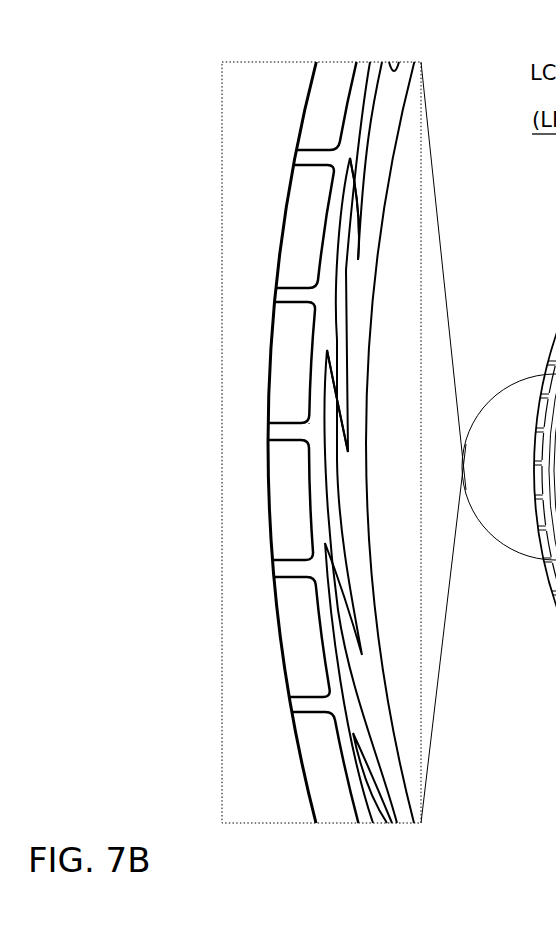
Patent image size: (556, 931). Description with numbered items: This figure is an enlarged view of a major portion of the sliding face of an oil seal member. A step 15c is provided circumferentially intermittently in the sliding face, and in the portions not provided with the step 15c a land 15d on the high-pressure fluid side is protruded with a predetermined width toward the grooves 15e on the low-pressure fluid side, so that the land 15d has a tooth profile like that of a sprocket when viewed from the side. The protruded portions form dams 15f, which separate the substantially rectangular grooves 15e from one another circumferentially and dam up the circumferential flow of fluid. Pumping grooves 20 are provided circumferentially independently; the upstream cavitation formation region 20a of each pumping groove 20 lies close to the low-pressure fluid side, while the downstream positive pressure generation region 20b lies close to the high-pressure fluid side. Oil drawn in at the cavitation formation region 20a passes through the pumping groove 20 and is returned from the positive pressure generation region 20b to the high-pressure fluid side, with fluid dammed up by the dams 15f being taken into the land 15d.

The step 15c is at (335, 250).
The land 15d is at (383, 128).
The grooves 15e is at (295, 212).
The dams 15f is at (283, 295).
The pumping groove 20 is at (342, 263).
The cavitation formation region 20a is at (355, 176).
The positive pressure generation region 20b is at (343, 440).